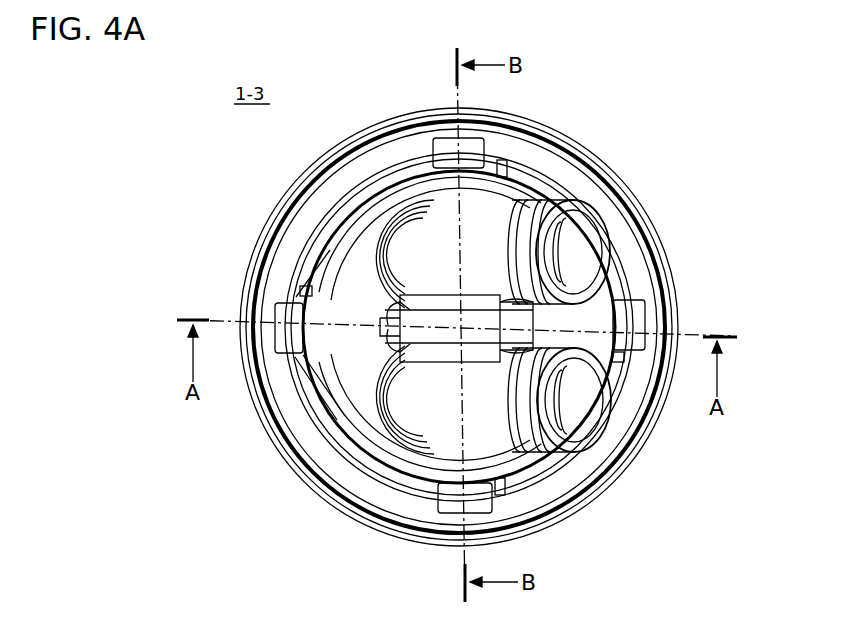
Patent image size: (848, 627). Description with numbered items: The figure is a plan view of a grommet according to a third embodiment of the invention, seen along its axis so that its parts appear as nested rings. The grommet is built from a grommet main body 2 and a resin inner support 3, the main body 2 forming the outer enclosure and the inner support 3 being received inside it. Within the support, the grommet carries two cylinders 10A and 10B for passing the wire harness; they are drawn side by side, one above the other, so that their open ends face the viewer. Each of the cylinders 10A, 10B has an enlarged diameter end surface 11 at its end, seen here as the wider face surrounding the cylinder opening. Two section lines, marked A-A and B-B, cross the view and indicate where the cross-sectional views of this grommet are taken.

The grommet main body 2 is at (679, 262).
The resin inner support 3 is at (563, 458).
The cylinder 10A is at (487, 232).
The cylinder 10B is at (495, 430).
The enlarged diameter end surface 11 is at (327, 343).